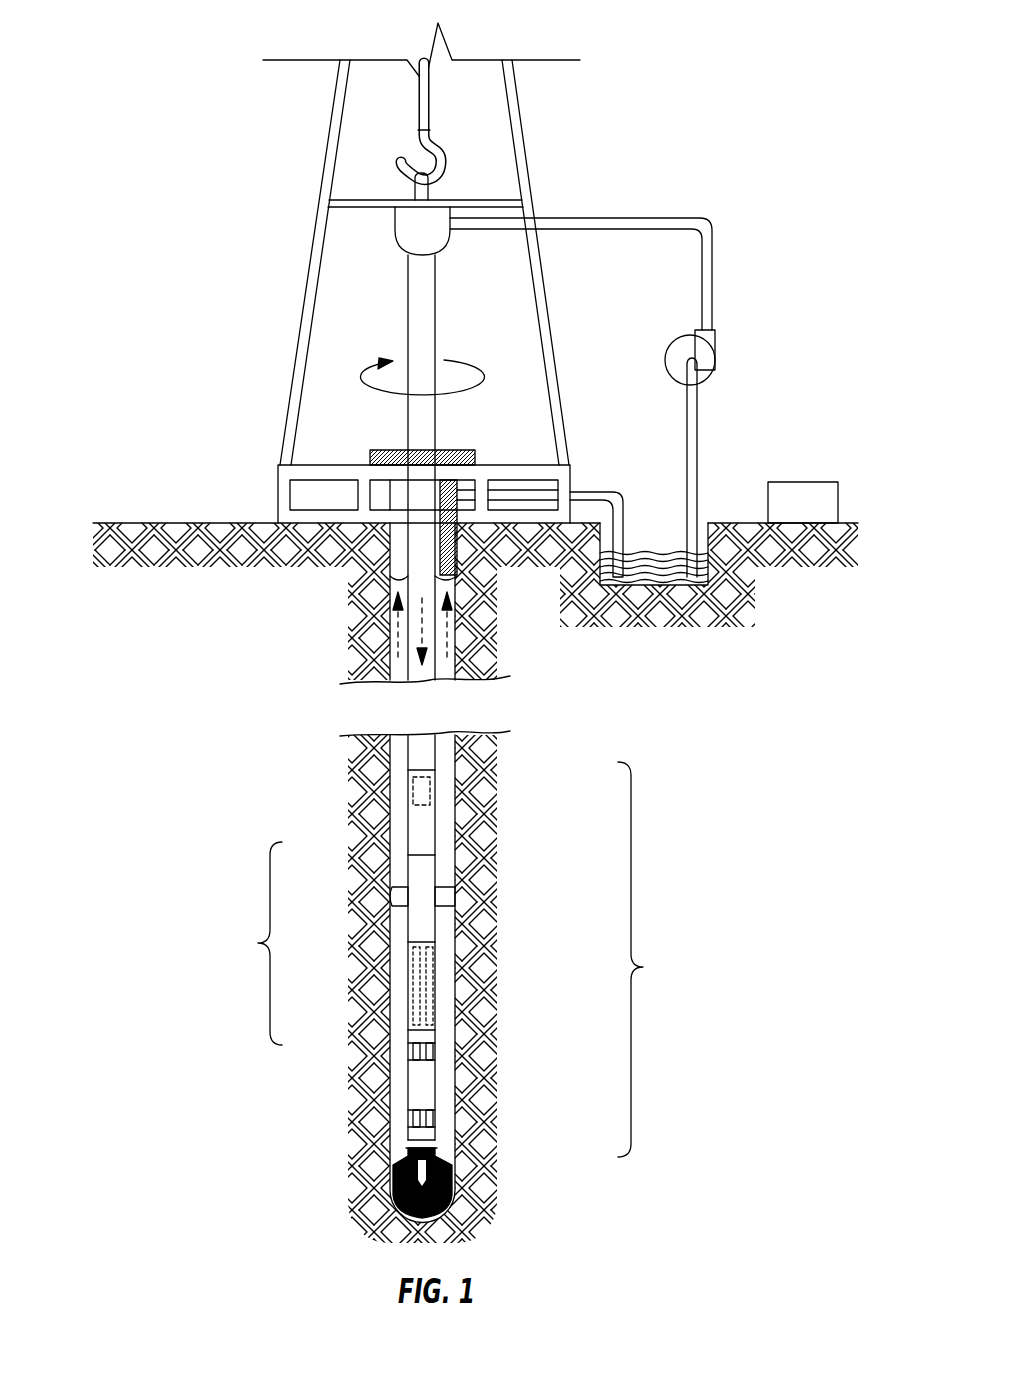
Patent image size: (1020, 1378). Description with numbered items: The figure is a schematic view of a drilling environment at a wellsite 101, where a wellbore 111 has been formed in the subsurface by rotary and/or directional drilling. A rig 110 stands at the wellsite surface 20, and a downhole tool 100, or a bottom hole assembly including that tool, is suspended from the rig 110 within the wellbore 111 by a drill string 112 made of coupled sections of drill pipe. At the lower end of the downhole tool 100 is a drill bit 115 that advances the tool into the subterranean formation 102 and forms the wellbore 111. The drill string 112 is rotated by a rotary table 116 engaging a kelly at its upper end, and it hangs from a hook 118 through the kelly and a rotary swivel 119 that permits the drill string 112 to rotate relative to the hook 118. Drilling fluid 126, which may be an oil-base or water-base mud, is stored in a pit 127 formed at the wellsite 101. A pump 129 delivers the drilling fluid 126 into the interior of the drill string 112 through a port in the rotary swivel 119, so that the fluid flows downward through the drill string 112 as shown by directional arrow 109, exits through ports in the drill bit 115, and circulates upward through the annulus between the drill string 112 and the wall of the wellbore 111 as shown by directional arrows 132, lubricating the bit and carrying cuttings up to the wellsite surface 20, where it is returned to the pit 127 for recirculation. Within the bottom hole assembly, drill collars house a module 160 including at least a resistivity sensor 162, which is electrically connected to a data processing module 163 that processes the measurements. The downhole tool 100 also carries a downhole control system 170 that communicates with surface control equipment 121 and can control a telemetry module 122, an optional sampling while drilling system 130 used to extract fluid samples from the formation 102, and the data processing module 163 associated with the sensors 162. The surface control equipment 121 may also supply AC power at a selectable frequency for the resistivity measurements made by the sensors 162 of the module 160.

The wellsite surface 20 is at (120, 523).
The downhole tool 100 is at (652, 959).
The wellsite 101 is at (613, 155).
The subterranean formation 102 is at (455, 1137).
The directional arrow 109 is at (420, 603).
The rig 110 is at (292, 302).
The wellbore 111 is at (445, 672).
The drill string 112 is at (408, 752).
The drill bit 115 is at (452, 1180).
The rotary table 116 is at (385, 450).
The hook 118 is at (450, 165).
The rotary swivel 119 is at (447, 247).
The surface control equipment 121 is at (821, 517).
The telemetry module 122 is at (408, 820).
The drilling fluid 126 is at (640, 552).
The pit 127 is at (710, 530).
The pump 129 is at (715, 352).
The sampling while drilling system 130 is at (334, 943).
The directional arrows 132 is at (398, 640).
The module 160 is at (408, 1037).
The resistivity sensor 162 is at (413, 1050).
The data processing module 163 is at (435, 1053).
The downhole control system 170 is at (430, 791).